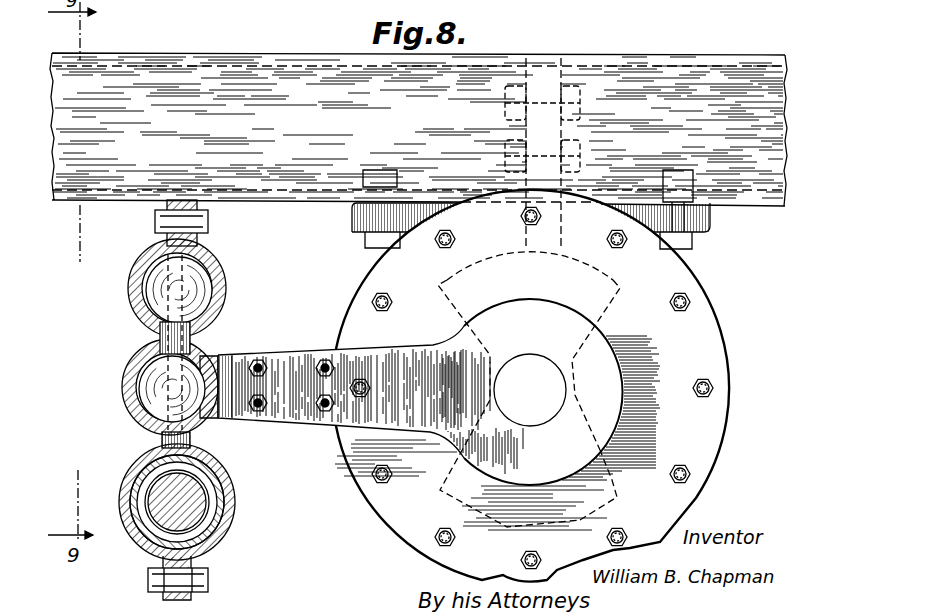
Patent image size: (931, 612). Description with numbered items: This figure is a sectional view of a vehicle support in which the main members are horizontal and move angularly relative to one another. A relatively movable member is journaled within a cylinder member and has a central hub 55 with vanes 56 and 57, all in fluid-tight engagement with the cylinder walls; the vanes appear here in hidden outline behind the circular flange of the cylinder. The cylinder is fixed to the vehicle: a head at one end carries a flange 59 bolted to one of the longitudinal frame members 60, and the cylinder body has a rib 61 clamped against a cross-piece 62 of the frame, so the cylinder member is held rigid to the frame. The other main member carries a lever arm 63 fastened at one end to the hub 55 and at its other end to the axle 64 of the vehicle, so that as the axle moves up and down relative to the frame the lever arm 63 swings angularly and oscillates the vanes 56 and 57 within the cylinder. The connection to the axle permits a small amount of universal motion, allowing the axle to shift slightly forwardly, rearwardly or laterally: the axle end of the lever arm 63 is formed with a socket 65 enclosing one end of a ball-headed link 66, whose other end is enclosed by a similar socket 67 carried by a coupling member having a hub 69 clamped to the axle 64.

The central hub 55 is at (548, 390).
The vane 56 is at (620, 296).
The vane 57 is at (618, 492).
The flange 59 is at (356, 215).
The longitudinal frame member 60 is at (680, 88).
The rib 61 is at (542, 112).
The cross-piece 62 is at (524, 112).
The lever arm 63 is at (281, 370).
The axle 64 is at (228, 480).
The socket 65 is at (126, 366).
The ball-headed link 66 is at (160, 342).
The socket 67 is at (152, 266).
The hub 69 is at (236, 501).